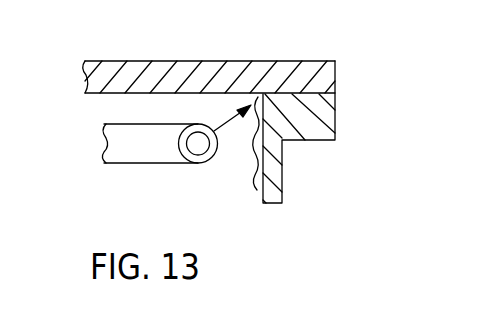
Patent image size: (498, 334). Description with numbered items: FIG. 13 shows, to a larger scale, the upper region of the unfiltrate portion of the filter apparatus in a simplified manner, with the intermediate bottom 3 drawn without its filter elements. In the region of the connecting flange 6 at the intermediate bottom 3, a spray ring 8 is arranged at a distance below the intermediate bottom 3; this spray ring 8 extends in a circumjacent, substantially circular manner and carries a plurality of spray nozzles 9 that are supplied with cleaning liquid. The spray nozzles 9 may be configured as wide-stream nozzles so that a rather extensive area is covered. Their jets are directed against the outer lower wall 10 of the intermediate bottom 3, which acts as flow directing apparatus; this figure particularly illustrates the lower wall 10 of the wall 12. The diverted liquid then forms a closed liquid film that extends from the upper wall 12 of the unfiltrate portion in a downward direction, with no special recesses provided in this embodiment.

The intermediate bottom 3 is at (186, 70).
The lower wall 10 is at (108, 94).
The connecting flange 6 is at (323, 121).
The upper wall 12 is at (258, 194).
The spray ring 8 is at (130, 166).
The spray nozzles 9 is at (210, 148).